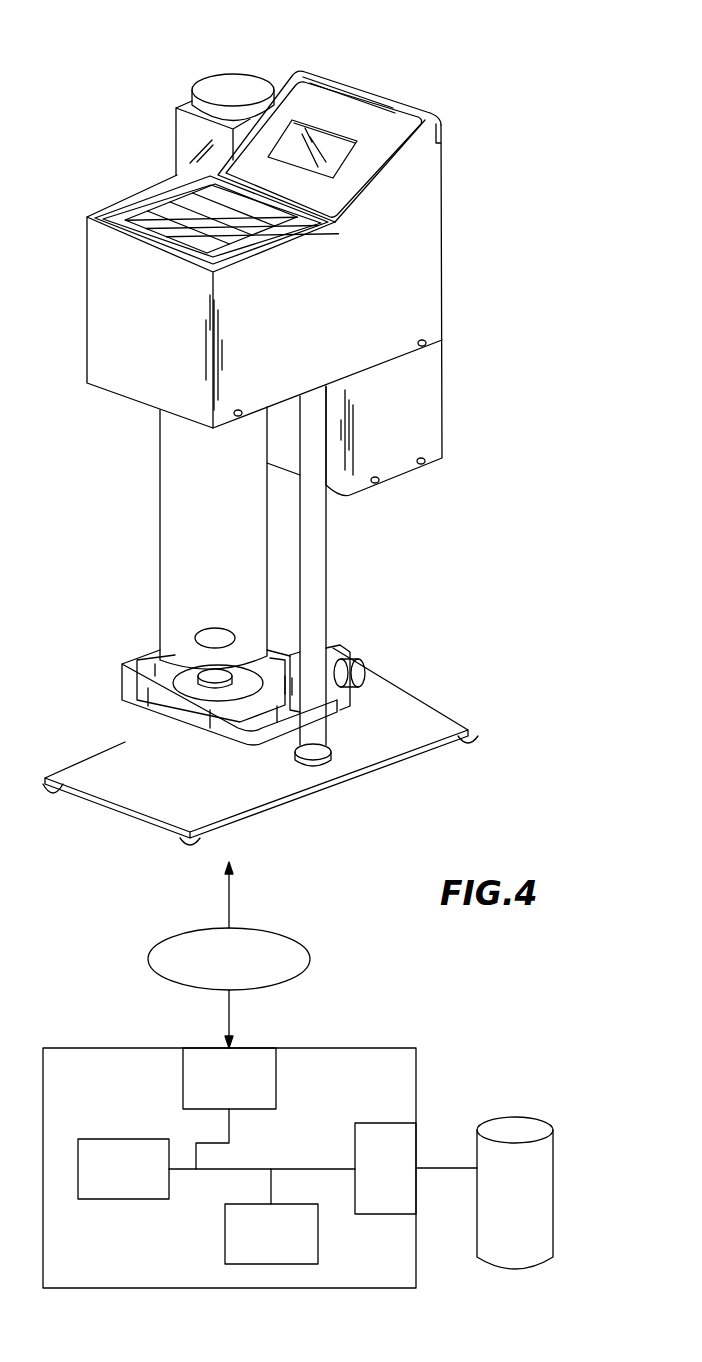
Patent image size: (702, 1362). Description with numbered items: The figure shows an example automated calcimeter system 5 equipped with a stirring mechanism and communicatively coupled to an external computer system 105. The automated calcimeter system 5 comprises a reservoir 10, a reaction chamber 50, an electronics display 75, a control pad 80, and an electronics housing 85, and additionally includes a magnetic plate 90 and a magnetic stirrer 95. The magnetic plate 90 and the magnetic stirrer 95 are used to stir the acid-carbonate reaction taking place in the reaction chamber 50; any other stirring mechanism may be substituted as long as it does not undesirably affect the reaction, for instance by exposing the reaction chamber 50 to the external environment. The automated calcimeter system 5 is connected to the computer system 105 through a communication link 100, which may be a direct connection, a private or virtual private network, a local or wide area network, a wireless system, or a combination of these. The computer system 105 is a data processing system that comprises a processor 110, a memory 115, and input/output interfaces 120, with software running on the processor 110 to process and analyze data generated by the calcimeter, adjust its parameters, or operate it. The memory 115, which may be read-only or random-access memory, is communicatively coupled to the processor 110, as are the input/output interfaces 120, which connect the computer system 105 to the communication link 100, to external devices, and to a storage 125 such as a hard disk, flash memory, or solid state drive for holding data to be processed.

The automated calcimeter system 5 is at (547, 93).
The reservoir 10 is at (173, 170).
The electronics display 75 is at (320, 137).
The control pad 80 is at (143, 217).
The electronics housing 85 is at (430, 218).
The reaction chamber 50 is at (158, 518).
The magnetic stirrer 95 is at (197, 640).
The magnetic plate 90 is at (122, 683).
The communication link 100 is at (208, 973).
The computer system 105 is at (72, 1101).
The processor 110 is at (249, 1247).
The memory 115 is at (101, 1182).
The I/O interface 120 is at (206, 1094).
The storage 125 is at (515, 1193).